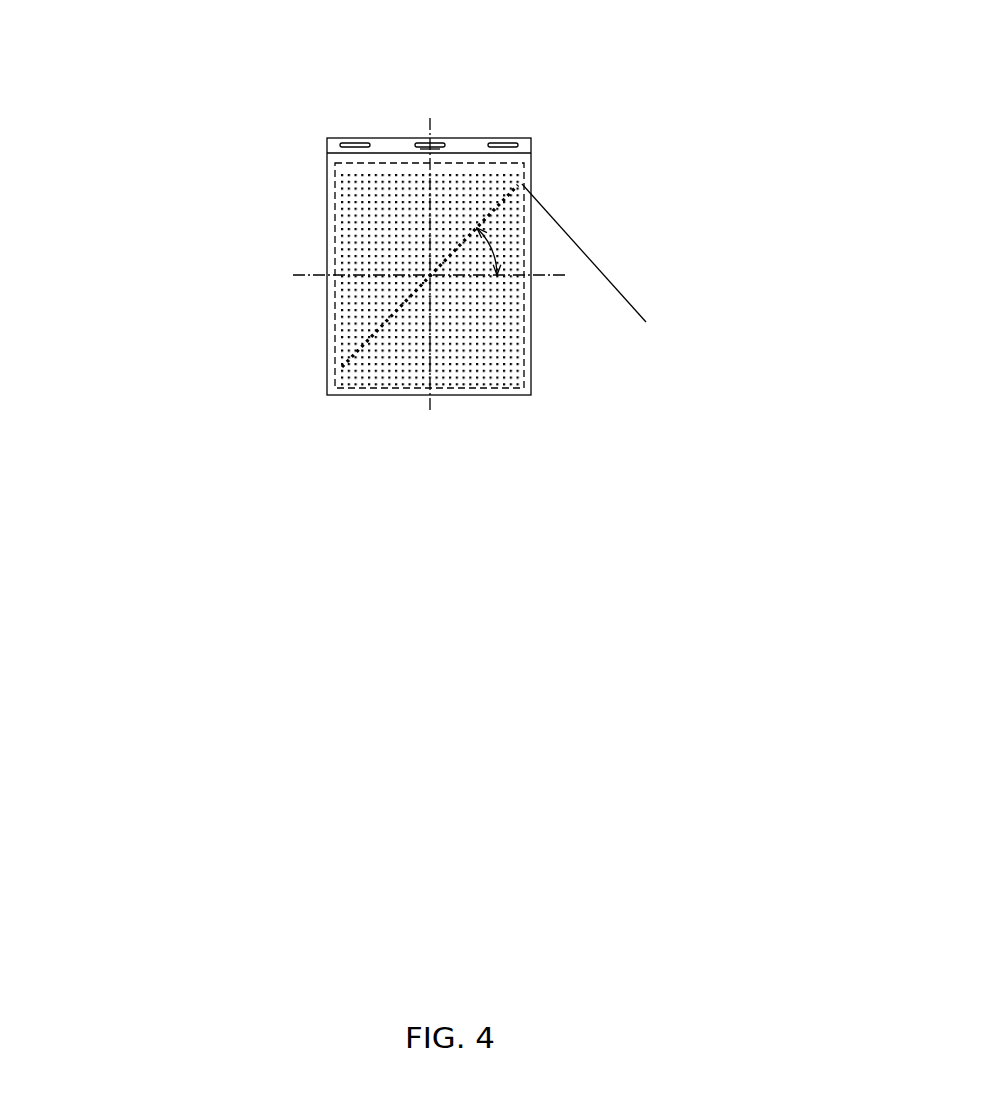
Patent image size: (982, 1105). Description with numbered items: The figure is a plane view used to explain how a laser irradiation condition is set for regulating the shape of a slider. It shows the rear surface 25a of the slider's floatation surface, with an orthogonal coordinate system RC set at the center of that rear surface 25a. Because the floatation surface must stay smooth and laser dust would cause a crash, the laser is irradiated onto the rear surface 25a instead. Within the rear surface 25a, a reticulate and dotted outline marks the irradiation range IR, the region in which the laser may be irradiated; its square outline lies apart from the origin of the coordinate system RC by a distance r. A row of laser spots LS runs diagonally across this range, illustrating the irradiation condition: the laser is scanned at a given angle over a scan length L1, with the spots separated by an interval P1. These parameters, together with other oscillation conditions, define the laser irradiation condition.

The rear surface 25a is at (478, 395).
The irradiation range IR is at (597, 285).
The laser spot LS is at (270, 276).
The laser scan length L1 is at (640, 318).
The interval between laser spots P1 is at (608, 329).
The orthogonal coordinate system RC is at (621, 138).
The distance r is at (537, 285).